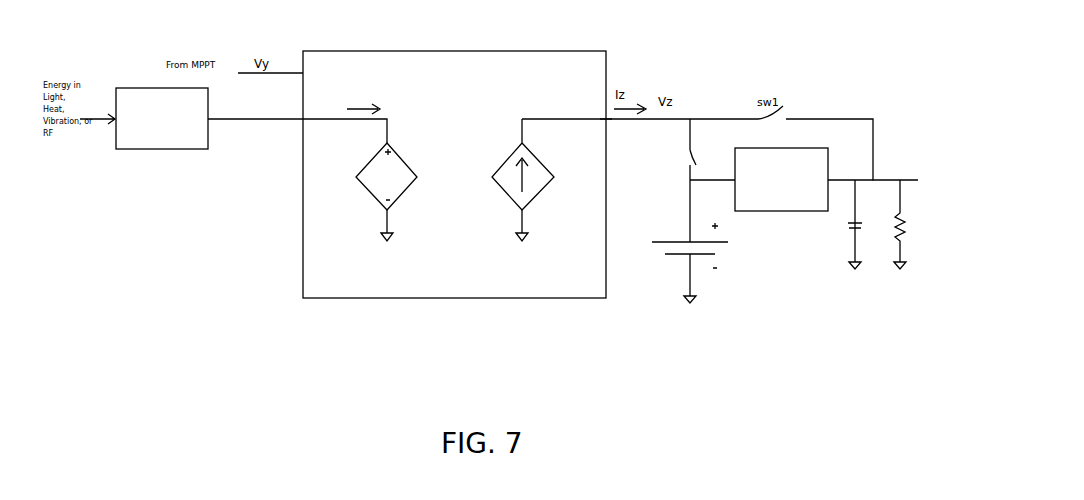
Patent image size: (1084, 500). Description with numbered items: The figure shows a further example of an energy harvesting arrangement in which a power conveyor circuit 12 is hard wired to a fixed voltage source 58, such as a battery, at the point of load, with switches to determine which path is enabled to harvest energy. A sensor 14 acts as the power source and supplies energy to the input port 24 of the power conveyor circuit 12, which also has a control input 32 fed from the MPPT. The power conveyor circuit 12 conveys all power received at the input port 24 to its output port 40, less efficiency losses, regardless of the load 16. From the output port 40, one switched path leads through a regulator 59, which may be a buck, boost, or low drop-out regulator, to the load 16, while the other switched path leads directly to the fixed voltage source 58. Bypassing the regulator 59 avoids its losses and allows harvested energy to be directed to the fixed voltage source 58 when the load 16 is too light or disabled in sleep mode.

The sensor 14 is at (162, 118).
The control input 32 is at (303, 73).
The input port 24 is at (303, 119).
The power conveyor circuit 12 is at (454, 174).
The output port 40 is at (606, 119).
The regulator 59 is at (781, 179).
The fixed voltage source 58 is at (689, 272).
The load 16 is at (903, 257).